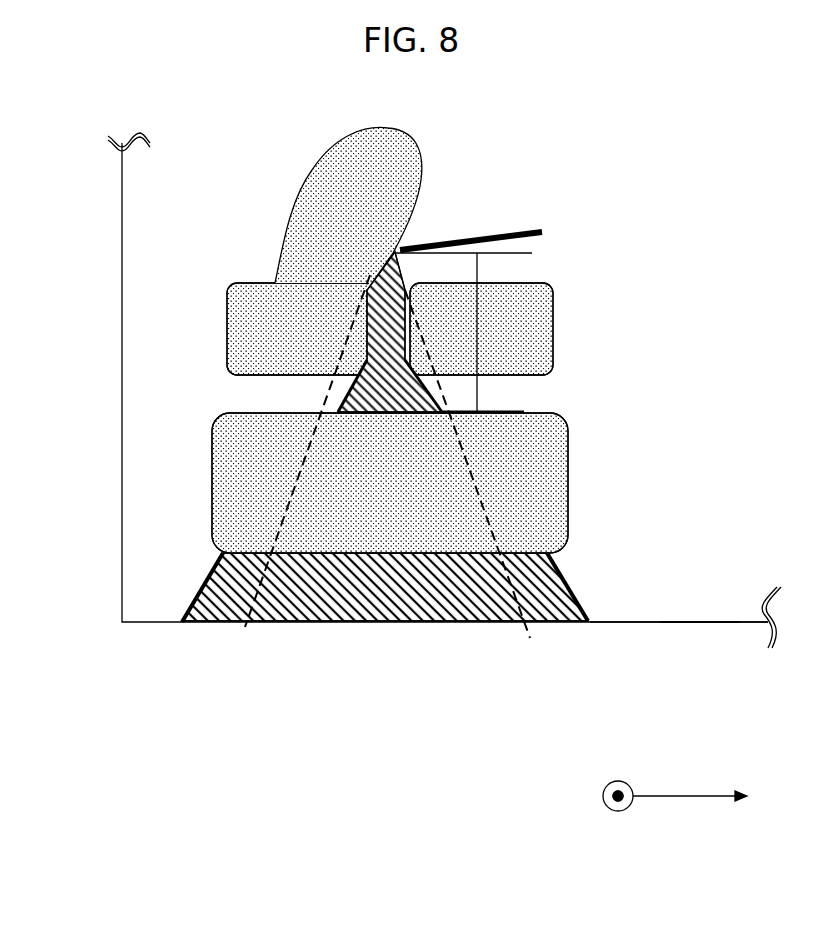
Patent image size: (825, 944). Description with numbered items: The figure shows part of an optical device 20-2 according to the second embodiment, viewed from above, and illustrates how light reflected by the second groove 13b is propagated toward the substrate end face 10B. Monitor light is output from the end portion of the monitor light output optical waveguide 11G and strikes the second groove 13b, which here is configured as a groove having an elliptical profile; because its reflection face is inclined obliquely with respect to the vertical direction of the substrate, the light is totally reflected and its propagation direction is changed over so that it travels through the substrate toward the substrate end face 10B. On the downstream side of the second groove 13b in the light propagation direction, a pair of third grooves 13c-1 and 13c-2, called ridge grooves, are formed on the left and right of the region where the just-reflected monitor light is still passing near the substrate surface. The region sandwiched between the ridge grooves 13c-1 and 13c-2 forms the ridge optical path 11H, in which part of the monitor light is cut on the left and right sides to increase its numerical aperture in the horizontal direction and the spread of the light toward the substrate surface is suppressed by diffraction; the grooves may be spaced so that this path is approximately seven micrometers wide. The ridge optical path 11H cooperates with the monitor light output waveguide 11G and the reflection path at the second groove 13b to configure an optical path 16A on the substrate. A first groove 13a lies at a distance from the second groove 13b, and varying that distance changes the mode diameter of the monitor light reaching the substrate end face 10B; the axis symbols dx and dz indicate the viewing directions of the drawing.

The substrate end face 10B is at (640, 622).
The optical device 20-2 is at (698, 631).
The first groove 13a is at (568, 482).
The third groove (ridge groove) 13c-1 is at (231, 338).
The third groove (ridge groove) 13c-2 is at (553, 328).
The ridge optical path 11H is at (380, 282).
The second groove (reflection groove) 13b is at (402, 130).
The monitor light output optical waveguide 11G is at (512, 231).
The optical path 16A is at (430, 236).
The x-direction axis dx is at (687, 796).
The z-direction axis dz is at (617, 812).